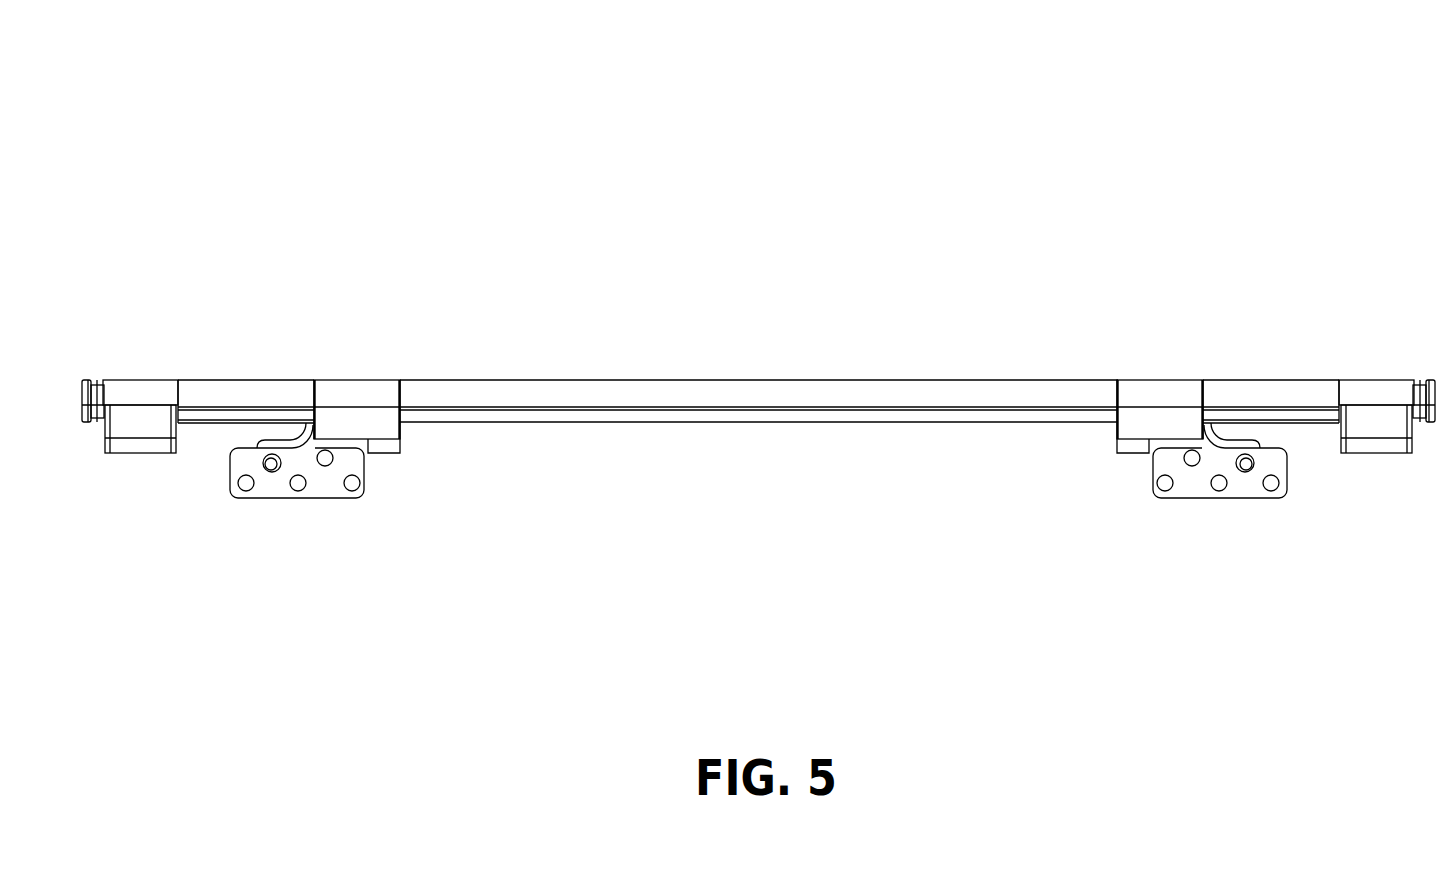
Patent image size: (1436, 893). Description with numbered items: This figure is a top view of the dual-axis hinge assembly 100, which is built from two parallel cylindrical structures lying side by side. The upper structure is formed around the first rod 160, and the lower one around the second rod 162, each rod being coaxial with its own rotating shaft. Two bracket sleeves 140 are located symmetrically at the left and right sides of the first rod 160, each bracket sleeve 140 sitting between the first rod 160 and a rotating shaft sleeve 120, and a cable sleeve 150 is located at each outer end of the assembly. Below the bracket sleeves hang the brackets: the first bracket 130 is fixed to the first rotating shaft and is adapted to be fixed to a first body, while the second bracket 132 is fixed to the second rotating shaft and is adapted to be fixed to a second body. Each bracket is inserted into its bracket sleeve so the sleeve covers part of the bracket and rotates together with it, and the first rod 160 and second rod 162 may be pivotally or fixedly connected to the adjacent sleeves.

The dual-axis hinge assembly 100 is at (190, 90).
The rotating shaft sleeve 120 is at (253, 390).
The first bracket 130 is at (327, 483).
The second bracket 132 is at (388, 448).
The bracket sleeve 140 is at (358, 390).
The cable sleeve 150 is at (138, 388).
The first rod 160 is at (668, 389).
The second rod 162 is at (668, 417).